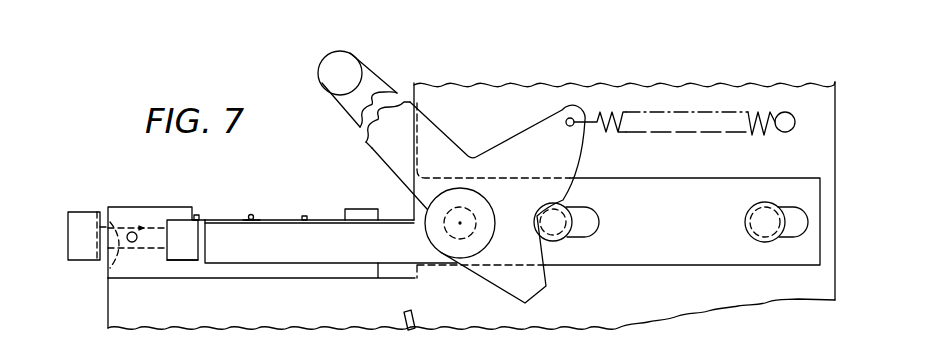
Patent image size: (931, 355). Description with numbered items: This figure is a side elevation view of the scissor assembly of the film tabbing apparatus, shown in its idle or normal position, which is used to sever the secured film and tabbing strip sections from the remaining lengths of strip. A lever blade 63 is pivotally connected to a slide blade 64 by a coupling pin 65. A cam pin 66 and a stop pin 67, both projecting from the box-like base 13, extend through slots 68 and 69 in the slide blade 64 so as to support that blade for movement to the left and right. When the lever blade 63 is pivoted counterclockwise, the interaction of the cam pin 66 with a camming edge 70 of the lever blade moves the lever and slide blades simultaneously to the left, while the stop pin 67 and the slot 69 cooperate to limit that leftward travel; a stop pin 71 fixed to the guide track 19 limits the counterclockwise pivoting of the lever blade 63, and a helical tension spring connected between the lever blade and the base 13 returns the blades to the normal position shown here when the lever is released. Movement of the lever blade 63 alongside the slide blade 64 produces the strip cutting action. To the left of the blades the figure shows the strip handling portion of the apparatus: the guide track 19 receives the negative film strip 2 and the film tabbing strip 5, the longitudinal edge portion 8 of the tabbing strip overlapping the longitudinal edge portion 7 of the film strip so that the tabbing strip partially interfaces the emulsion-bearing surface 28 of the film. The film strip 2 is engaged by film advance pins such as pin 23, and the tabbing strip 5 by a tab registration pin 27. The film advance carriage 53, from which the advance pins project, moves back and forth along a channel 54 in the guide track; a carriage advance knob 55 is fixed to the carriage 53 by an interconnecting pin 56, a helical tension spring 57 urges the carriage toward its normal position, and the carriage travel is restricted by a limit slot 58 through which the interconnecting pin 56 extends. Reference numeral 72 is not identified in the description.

The negative film strip 2 is at (227, 216).
The film tabbing strip 5 is at (323, 216).
The longitudinal edge portion 7 is at (256, 218).
The longitudinal edge portion 8 is at (252, 215).
The box-like base 13 is at (477, 105).
The guide track 19 is at (167, 207).
The film advance pin 23 is at (196, 215).
The tab registration pin 27 is at (304, 216).
The emulsion-bearing surface 28 is at (246, 218).
The film advance carriage 53 is at (195, 244).
The channel 54 is at (168, 257).
The carriage advance knob 55 is at (82, 214).
The interconnecting pin 56 is at (126, 227).
The helical tension spring 57 is at (143, 247).
The limit slot 58 is at (115, 258).
The lever blade 63 is at (370, 150).
The slide blade 64 is at (327, 255).
The coupling pin 65 is at (486, 236).
The cam pin 66 is at (564, 236).
The stop pin 67 is at (753, 225).
The slot 68 is at (584, 211).
The slot 69 is at (789, 207).
The camming edge 70 is at (542, 207).
The stop pin 71 is at (128, 243).
The spring 72 is at (607, 112).